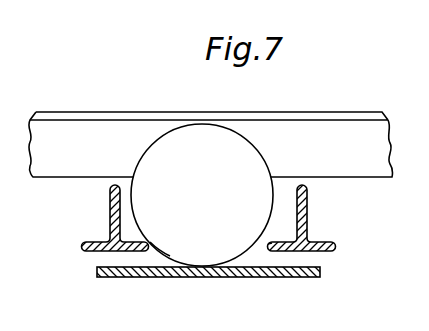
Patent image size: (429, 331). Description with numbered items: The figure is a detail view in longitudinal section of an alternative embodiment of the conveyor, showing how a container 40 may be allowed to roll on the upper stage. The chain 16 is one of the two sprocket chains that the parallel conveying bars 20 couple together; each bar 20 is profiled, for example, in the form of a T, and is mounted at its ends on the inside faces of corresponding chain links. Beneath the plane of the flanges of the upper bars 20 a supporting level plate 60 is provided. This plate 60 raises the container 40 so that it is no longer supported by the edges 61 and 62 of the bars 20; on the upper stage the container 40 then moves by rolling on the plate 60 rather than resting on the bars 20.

The chain 16 is at (340, 118).
The ball 40 is at (200, 132).
The conveying bars 20 is at (110, 210).
The supporting level plate 60 is at (228, 272).
The edge of the bars 61 is at (268, 244).
The edge of the bars 62 is at (150, 242).